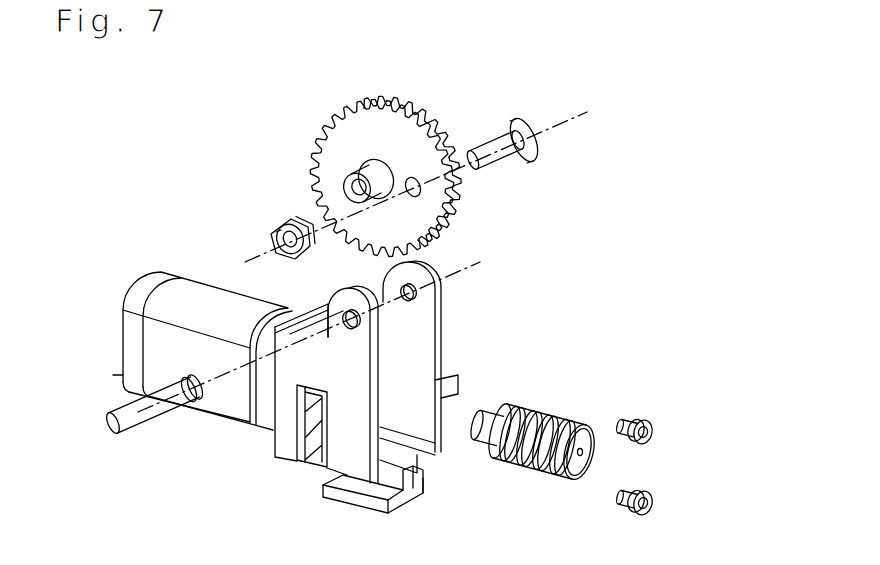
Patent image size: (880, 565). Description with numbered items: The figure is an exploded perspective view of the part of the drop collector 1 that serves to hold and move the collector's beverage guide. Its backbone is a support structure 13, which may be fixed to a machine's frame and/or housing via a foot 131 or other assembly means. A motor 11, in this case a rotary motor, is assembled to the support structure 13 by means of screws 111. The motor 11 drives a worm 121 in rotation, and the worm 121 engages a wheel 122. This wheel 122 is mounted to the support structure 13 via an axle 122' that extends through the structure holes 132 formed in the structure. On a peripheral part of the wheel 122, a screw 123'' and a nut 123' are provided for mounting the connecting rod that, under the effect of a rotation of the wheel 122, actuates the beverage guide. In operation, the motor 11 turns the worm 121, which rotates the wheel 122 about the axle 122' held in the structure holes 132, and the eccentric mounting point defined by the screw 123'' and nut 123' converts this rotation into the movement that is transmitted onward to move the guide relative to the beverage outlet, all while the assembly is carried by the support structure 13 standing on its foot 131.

The drop collector 1 is at (617, 223).
The motor 11 is at (197, 298).
The support structure 13 is at (287, 453).
The screws 111 is at (645, 425).
The worm 121 is at (533, 413).
The wheel 122 is at (375, 157).
The axle 122' is at (159, 426).
The nut 123' is at (237, 190).
The screw 123'' is at (501, 96).
The foot 131 is at (362, 498).
The structure holes 132 is at (343, 323).